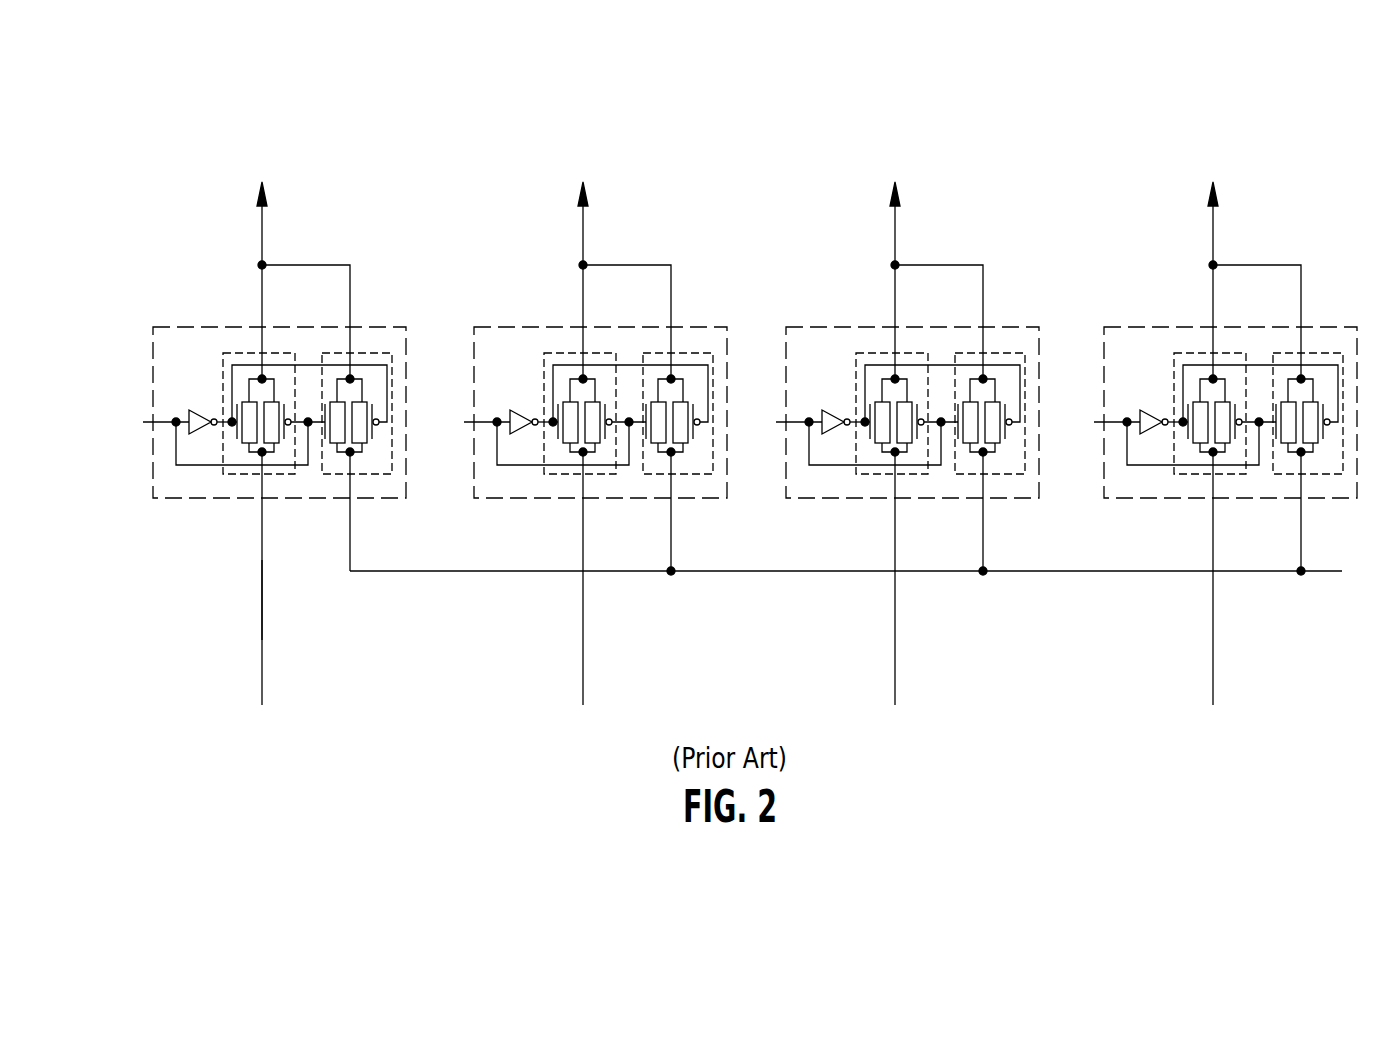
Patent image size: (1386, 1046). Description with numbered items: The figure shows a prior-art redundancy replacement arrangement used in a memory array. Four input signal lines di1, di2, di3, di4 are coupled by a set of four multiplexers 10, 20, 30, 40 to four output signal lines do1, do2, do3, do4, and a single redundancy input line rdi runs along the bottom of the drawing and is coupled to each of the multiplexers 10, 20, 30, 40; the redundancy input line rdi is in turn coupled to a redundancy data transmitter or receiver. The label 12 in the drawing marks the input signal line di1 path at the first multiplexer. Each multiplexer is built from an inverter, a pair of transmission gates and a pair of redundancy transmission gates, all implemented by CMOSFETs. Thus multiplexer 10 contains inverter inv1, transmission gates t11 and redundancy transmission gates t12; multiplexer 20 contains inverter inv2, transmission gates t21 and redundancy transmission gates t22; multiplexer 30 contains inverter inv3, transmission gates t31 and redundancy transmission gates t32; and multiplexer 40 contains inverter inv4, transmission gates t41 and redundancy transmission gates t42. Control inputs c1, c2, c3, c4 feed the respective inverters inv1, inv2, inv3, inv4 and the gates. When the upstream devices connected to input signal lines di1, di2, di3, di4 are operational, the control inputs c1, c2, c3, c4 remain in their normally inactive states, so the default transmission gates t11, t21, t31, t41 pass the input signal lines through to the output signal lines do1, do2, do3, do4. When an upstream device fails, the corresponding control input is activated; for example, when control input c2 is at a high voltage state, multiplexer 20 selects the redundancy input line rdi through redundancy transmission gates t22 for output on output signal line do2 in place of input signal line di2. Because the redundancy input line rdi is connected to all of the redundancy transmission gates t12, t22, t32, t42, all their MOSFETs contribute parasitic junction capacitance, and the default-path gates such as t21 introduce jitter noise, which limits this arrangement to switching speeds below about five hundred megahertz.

The multiplexer 10 is at (365, 325).
The multiplexer 20 is at (600, 382).
The multiplexer 30 is at (912, 382).
The multiplexer 40 is at (1230, 382).
The data input line 12 is at (260, 610).
The inverter inv1 is at (190, 414).
The inverter inv2 is at (481, 392).
The inverter inv3 is at (793, 392).
The inverter inv4 is at (1111, 392).
The transmission gates t11 is at (237, 477).
The redundancy transmission gates t12 is at (335, 477).
The transmission gates t21 is at (557, 453).
The redundancy transmission gates t22 is at (657, 453).
The transmission gates t31 is at (869, 453).
The redundancy transmission gates t32 is at (969, 453).
The transmission gates t41 is at (1187, 453).
The redundancy transmission gates t42 is at (1287, 453).
The control input c1 is at (149, 423).
The control input c2 is at (470, 423).
The control input c3 is at (782, 423).
The control input c4 is at (1100, 423).
The output signal line do1 is at (265, 206).
The output signal line do2 is at (586, 206).
The output signal line do3 is at (898, 206).
The output signal line do4 is at (1216, 206).
The input signal line di1 is at (258, 672).
The input signal line di2 is at (579, 672).
The input signal line di3 is at (891, 672).
The input signal line di4 is at (1209, 672).
The redundancy input line rdi is at (864, 575).